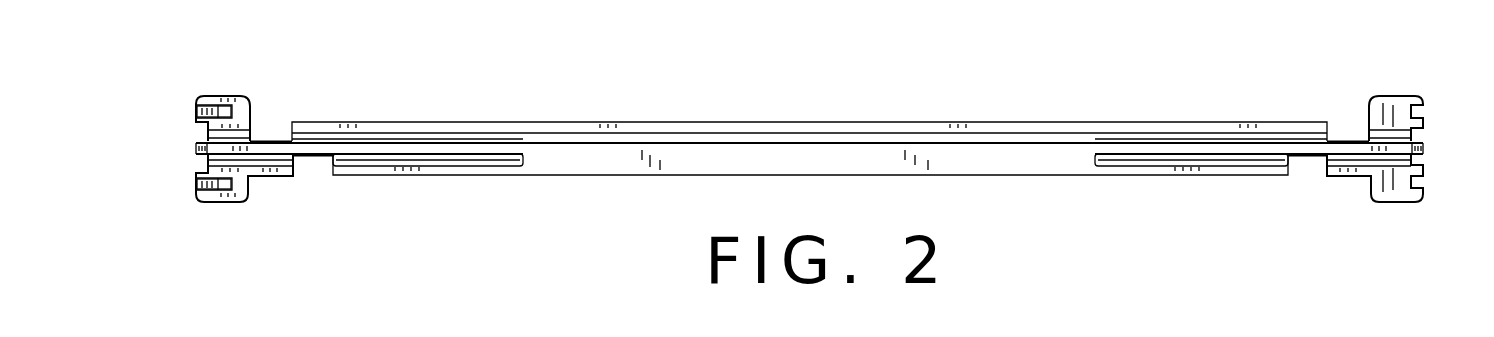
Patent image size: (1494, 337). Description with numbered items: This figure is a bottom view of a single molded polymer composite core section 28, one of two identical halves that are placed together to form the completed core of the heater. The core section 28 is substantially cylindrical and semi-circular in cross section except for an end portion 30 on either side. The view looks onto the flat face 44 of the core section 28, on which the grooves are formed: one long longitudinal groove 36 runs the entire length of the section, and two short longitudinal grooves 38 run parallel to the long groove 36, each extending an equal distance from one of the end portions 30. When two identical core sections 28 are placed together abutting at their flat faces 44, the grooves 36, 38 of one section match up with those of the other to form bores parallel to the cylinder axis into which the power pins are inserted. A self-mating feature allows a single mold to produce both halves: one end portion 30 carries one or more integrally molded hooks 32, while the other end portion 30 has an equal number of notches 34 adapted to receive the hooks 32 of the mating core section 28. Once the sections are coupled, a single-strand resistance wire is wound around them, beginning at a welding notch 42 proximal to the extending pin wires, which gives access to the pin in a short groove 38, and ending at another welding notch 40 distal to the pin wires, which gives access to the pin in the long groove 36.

The core section 28 is at (964, 88).
The end portion 30 is at (246, 96).
The hook 32 is at (197, 183).
The notch 34 is at (1440, 185).
The long longitudinal groove 36 is at (457, 137).
The short longitudinal groove 38 is at (440, 157).
The welding notch 40 is at (273, 122).
The welding notch 42 is at (314, 190).
The flat face 44 is at (1022, 158).